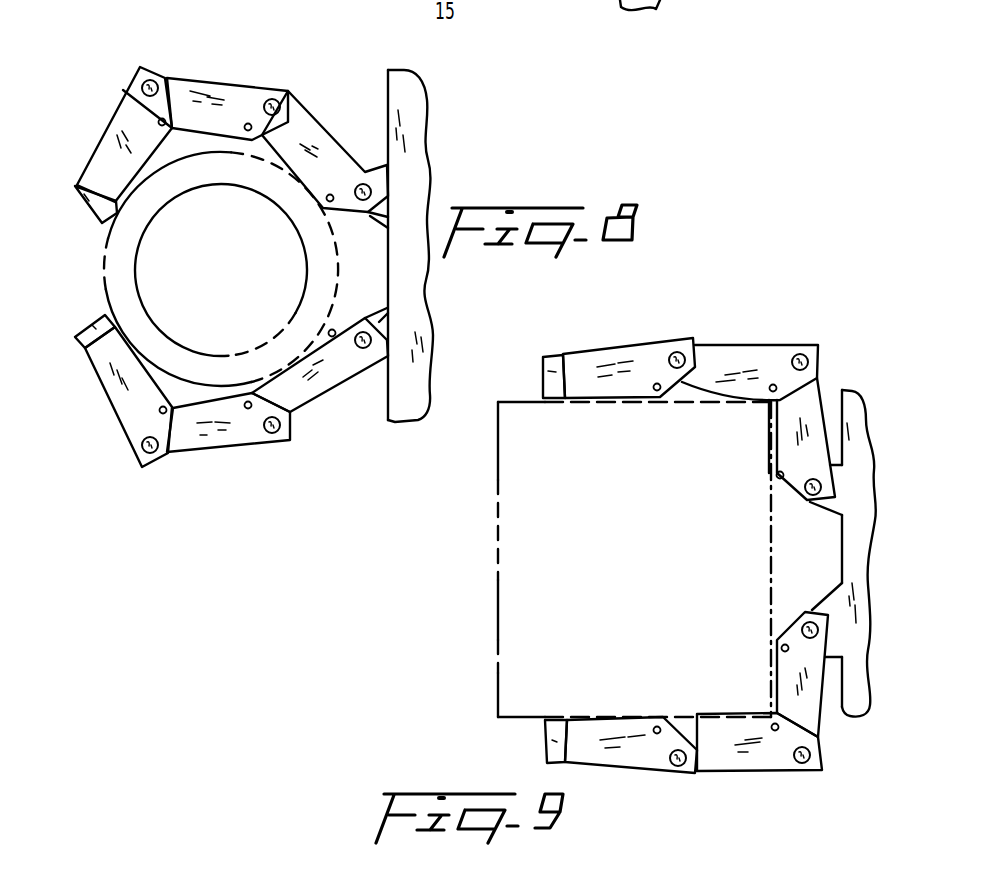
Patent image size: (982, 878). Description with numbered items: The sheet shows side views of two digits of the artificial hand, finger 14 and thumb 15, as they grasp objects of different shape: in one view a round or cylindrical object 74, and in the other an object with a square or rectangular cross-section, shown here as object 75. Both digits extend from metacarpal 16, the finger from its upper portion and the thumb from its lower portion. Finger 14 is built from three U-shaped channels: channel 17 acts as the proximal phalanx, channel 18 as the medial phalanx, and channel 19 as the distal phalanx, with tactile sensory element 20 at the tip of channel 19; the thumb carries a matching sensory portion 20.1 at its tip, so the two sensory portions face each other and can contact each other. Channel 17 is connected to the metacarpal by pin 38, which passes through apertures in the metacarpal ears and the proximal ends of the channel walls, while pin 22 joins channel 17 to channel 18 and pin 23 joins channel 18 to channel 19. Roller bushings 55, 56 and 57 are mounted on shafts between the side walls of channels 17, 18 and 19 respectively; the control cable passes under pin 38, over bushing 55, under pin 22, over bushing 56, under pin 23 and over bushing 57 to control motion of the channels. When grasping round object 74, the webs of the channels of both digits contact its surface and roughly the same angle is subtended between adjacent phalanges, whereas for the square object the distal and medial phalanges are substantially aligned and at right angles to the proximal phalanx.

In FIG. 8, the finger 14 is at (233, 64).
In FIG. 9, the finger 14 is at (702, 322).
In FIG. 8, the thumb 15 is at (268, 455).
In FIG. 9, the thumb 15 is at (711, 790).
In FIG. 8, the metacarpal 16 is at (418, 146).
In FIG. 9, the metacarpal 16 is at (866, 405).
In FIG. 8, the U-shaped channel 17 is at (310, 123).
In FIG. 9, the U-shaped channel 17 is at (815, 393).
In FIG. 8, the U-shaped channel 18 is at (192, 87).
In FIG. 9, the U-shaped channel 18 is at (735, 350).
In FIG. 8, the U-shaped channel 19 is at (110, 128).
In FIG. 9, the U-shaped channel 19 is at (603, 357).
In FIG. 8, the tactile sensory element 20 is at (78, 188).
In FIG. 9, the tactile sensory element 20 is at (548, 357).
In FIG. 8, the sensory portion 20.1 is at (95, 320).
In FIG. 9, the sensory portion 20.1 is at (557, 750).
In FIG. 8, the pin 22 is at (149, 80).
In FIG. 9, the pin 22 is at (673, 352).
In FIG. 8, the pin 23 is at (275, 99).
In FIG. 9, the pin 23 is at (797, 354).
In FIG. 8, the pin 38 is at (365, 184).
In FIG. 9, the pin 38 is at (811, 496).
In FIG. 8, the roller bushing 55 is at (331, 194).
In FIG. 9, the roller bushing 55 is at (776, 475).
In FIG. 8, the roller bushing 56 is at (248, 123).
In FIG. 9, the roller bushing 56 is at (770, 391).
In FIG. 8, the roller bushing 57 is at (159, 119).
In FIG. 9, the roller bushing 57 is at (655, 391).
In FIG. 8, the round object 74 is at (150, 248).
In FIG. 9, the rectangular workpiece 75 is at (522, 580).